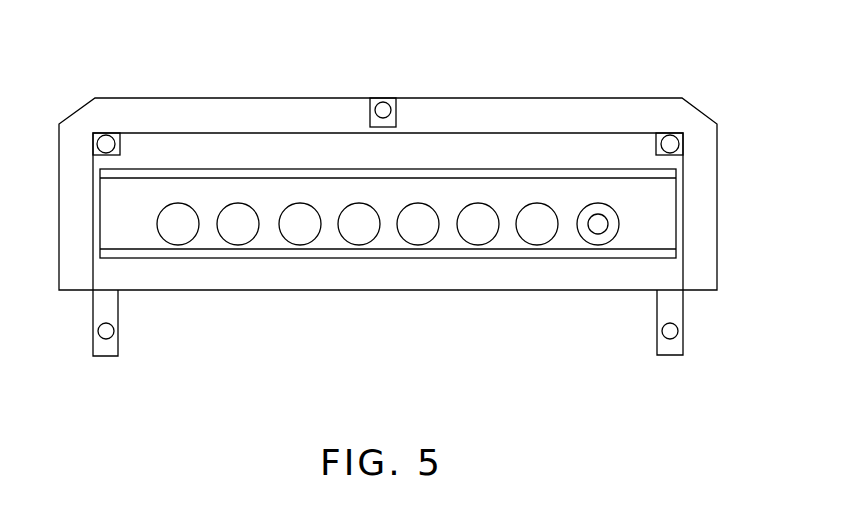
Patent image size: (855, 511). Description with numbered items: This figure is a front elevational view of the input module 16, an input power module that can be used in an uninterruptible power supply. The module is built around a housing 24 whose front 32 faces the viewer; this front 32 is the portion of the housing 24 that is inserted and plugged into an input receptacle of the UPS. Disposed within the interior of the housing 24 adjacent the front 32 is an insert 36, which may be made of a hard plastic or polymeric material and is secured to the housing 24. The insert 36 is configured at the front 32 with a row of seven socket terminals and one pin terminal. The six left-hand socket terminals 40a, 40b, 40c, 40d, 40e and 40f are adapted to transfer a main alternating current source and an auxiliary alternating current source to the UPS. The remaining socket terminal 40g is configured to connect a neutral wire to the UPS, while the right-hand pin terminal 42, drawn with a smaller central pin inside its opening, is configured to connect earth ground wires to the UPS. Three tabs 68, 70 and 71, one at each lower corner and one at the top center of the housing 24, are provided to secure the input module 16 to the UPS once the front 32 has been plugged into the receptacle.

The input module 16 is at (188, 370).
The housing 24 is at (93, 98).
The front 32 is at (650, 210).
The insert 36 is at (147, 168).
The socket terminal 40a is at (172, 205).
The socket terminal 40b is at (228, 238).
The socket terminal 40c is at (294, 205).
The socket terminal 40d is at (348, 238).
The socket terminal 40e is at (412, 205).
The socket terminal 40f is at (466, 238).
The socket terminal 40g is at (532, 205).
The pin terminal 42 is at (598, 225).
The tab 68 is at (97, 310).
The tab 70 is at (677, 347).
The tab 71 is at (378, 98).